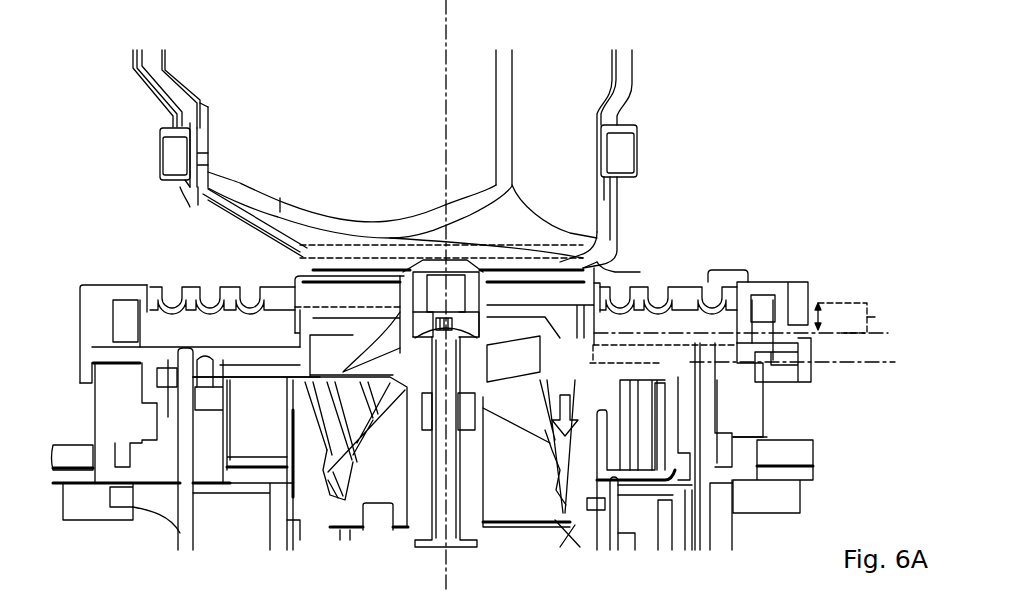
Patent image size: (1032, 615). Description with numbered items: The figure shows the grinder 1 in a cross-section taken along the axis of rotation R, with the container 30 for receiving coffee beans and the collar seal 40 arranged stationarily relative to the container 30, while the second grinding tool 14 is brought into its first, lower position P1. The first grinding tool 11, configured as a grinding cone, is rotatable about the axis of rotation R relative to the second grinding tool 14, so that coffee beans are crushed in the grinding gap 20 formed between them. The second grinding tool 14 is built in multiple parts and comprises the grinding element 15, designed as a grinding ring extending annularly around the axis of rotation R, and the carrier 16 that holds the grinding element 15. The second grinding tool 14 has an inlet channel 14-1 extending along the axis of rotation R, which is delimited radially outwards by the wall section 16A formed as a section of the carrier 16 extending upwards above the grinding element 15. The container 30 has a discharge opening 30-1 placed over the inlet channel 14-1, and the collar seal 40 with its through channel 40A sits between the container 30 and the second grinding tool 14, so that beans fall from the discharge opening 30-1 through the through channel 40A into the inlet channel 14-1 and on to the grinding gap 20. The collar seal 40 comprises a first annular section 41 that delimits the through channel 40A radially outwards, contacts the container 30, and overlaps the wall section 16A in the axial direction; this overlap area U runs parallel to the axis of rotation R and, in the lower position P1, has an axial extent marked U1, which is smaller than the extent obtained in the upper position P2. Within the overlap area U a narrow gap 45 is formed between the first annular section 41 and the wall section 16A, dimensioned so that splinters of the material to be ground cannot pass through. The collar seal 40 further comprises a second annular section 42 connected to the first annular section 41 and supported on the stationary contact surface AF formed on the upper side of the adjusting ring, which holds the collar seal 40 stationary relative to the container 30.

The grinder 1 is at (825, 48).
The axis of rotation R is at (451, 23).
The container 30 is at (138, 70).
The discharge opening 30-1 is at (392, 250).
The through channel 40A is at (322, 282).
The inlet channel 14-1 is at (354, 326).
The grinding gap 20 is at (565, 394).
The first annular section 41 is at (602, 268).
The collar seal 40 is at (675, 253).
The second annular section 42 is at (729, 268).
The contact surface AF is at (118, 281).
The gap 45 is at (298, 318).
The wall section 16A is at (303, 345).
The overlap area U is at (875, 317).
The extent of the overlap area U1 is at (841, 319).
The second (upper) position P2 is at (888, 333).
The first (lower) position P1 is at (890, 362).
The carrier 16 is at (688, 412).
The second grinding tool 14 is at (241, 509).
The grinding element 15 is at (308, 512).
The first grinding tool 11 is at (393, 463).